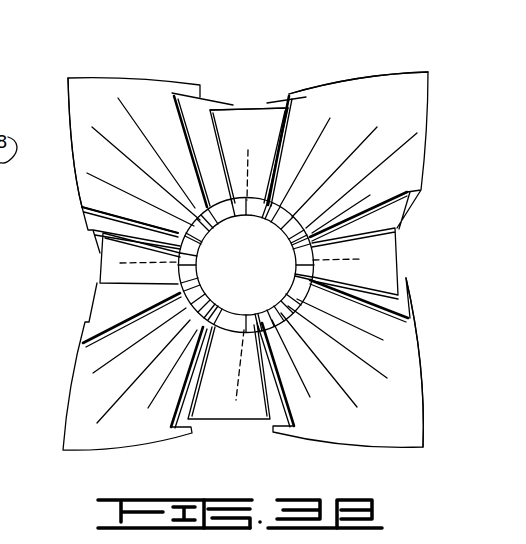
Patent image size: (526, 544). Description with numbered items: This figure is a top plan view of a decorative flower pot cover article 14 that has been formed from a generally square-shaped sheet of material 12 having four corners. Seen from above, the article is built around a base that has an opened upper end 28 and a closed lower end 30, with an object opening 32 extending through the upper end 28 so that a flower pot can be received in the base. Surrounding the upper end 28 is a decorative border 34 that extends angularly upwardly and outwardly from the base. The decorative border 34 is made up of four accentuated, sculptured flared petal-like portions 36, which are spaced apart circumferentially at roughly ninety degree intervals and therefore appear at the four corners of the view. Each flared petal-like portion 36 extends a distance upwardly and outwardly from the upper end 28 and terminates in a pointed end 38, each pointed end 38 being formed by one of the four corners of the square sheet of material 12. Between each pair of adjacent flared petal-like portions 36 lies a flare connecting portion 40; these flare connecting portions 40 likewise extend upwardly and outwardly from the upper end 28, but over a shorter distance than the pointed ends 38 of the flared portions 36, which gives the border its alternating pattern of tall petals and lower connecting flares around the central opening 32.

The sheet of material 12 is at (397, 393).
The decorative flower pot cover article 14 is at (216, 96).
The opened upper end 28 is at (290, 213).
The closed lower end 30 is at (273, 268).
The object opening 32 is at (198, 219).
The decorative border 34 is at (337, 77).
The flared petal-like portion 36 is at (102, 104).
The pointed end 38 is at (68, 78).
The flare connecting portion 40 is at (247, 136).